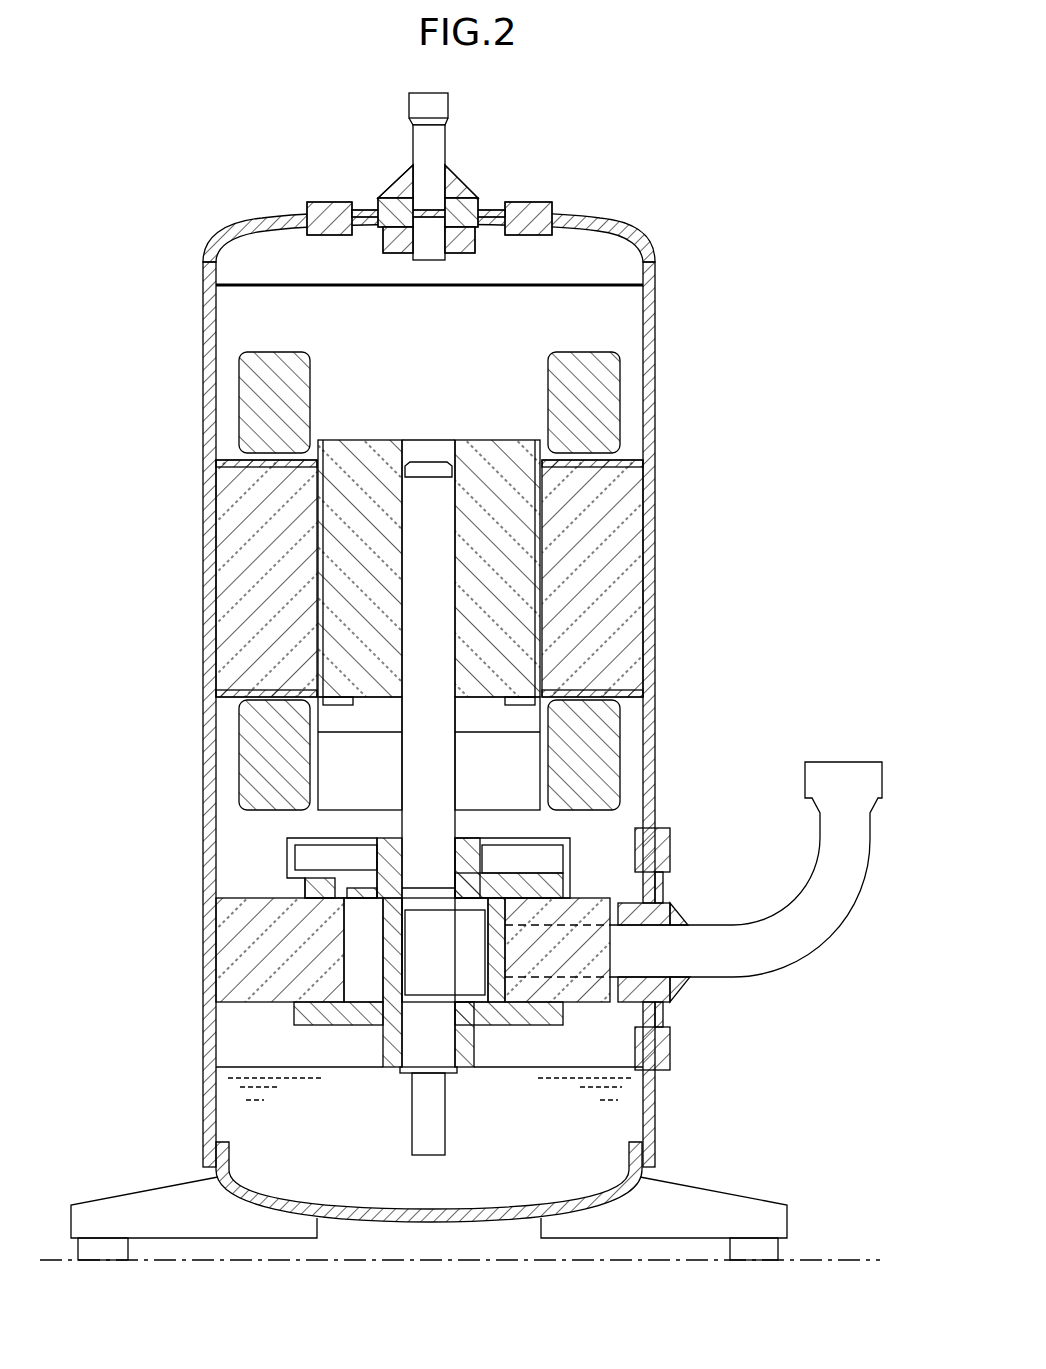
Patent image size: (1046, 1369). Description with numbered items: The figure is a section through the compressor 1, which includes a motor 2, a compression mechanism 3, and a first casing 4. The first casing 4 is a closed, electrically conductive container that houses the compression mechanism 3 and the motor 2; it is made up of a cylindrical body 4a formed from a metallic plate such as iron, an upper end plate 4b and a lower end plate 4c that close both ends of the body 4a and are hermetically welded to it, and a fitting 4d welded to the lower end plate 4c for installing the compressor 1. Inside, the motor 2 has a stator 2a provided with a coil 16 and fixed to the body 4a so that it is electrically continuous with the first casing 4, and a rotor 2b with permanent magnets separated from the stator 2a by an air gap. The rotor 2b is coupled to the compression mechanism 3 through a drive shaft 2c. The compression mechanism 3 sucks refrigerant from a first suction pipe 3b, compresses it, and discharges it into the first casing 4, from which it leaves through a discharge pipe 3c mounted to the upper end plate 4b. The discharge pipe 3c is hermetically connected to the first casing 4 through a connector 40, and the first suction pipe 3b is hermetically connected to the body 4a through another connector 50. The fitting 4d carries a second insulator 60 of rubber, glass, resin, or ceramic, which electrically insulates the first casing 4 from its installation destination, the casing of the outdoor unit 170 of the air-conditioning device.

The compressor 1 is at (640, 120).
The motor 2 is at (587, 820).
The stator 2a is at (228, 565).
The rotor 2b is at (540, 652).
The drive shaft 2c is at (440, 765).
The compression mechanism 3 is at (280, 1020).
The first suction pipe 3b is at (857, 905).
The discharge pipe 3c is at (450, 103).
The first casing 4 is at (655, 520).
The body 4a is at (657, 357).
The upper end plate 4b is at (590, 223).
The lower end plate 4c is at (418, 1223).
The fitting 4d is at (148, 1190).
The coil 16 is at (277, 365).
The connector 40 is at (370, 180).
The connector 50 is at (685, 1003).
The second insulator 60 is at (103, 1250).
The outdoor unit 170 is at (862, 1258).